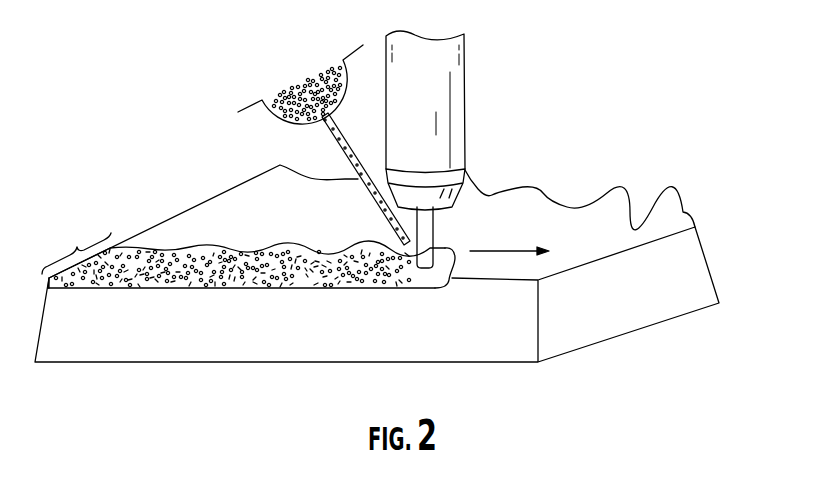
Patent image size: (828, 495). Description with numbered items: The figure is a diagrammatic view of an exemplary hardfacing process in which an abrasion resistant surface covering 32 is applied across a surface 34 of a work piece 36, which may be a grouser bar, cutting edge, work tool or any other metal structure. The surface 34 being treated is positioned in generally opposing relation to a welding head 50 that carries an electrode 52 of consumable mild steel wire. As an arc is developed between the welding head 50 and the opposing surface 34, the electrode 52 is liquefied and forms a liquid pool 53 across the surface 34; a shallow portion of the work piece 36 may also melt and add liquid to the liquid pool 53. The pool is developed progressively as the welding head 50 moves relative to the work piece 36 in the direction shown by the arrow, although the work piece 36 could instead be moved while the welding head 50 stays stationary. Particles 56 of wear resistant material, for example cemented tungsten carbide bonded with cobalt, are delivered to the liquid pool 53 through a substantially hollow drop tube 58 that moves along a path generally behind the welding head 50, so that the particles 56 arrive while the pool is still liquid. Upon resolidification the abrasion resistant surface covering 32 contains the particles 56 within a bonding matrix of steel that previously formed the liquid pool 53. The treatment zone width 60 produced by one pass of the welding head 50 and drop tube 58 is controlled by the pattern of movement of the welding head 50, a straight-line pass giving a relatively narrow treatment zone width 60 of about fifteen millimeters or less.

The abrasion resistant surface covering 32 is at (147, 260).
The surface 34 is at (275, 215).
The work piece 36 is at (625, 196).
The welding head 50 is at (465, 110).
The electrode 52 is at (433, 229).
The liquid pool 53 is at (452, 248).
The particles 56 is at (312, 85).
The drop tube 58 is at (386, 165).
The treatment zone width 60 is at (76, 245).